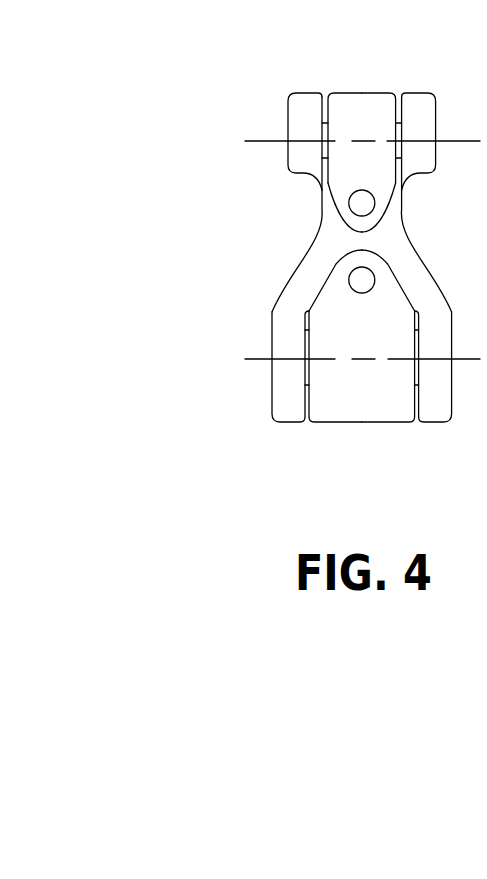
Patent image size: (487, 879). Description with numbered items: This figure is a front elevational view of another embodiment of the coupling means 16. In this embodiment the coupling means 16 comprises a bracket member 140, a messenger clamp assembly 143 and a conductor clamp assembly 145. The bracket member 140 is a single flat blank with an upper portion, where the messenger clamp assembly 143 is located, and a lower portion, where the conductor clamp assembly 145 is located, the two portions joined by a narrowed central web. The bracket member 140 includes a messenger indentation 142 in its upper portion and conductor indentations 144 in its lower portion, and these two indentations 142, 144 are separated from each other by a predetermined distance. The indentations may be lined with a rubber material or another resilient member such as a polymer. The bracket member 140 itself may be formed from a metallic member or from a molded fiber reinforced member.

The bracket member 140 is at (277, 40).
The messenger clamp assembly 143 is at (246, 105).
The messenger indentation 142 is at (302, 150).
The coupling means 16 is at (246, 157).
The conductor clamp assembly 145 is at (240, 380).
The conductor indentations 144 is at (284, 401).